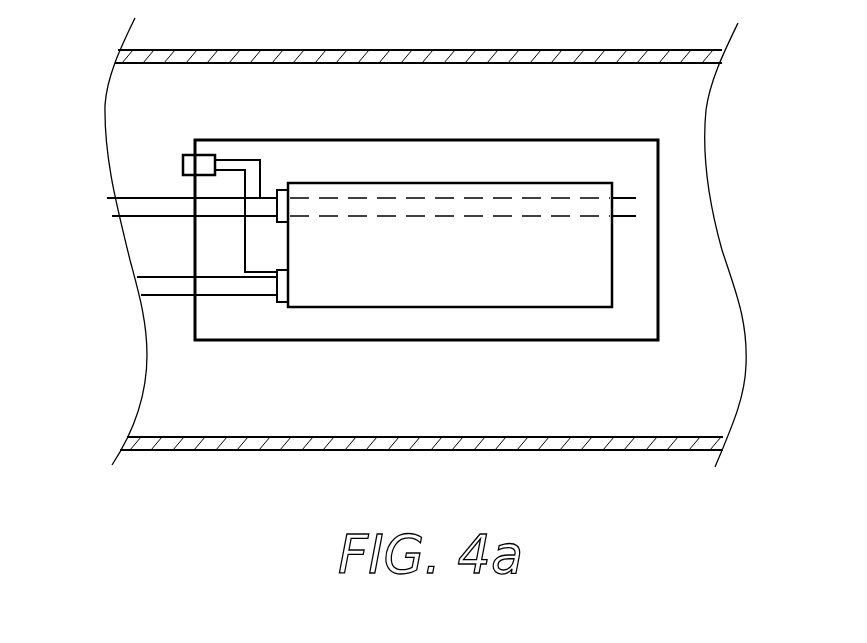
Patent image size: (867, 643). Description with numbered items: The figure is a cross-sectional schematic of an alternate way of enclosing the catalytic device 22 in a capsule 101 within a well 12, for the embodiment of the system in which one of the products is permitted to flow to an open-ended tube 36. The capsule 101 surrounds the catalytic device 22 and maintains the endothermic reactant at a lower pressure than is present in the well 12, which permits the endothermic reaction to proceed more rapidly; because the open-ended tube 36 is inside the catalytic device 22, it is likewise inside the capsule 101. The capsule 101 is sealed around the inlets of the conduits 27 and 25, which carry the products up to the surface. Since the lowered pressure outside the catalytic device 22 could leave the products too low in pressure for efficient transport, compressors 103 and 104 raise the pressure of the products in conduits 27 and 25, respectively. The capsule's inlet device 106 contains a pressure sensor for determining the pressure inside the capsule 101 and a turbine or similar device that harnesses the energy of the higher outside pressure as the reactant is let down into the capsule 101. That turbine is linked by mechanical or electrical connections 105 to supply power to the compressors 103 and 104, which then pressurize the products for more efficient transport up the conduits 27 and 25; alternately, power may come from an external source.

The well 12 is at (548, 50).
The catalytic device 22 is at (462, 183).
The conduit 25 is at (163, 296).
The conduit 27 is at (126, 197).
The open-ended tube 36 is at (627, 197).
The capsule 101 is at (373, 140).
The compressor 103 is at (280, 190).
The compressor 104 is at (292, 303).
The connections 105 is at (248, 160).
The inlet device 106 is at (182, 166).